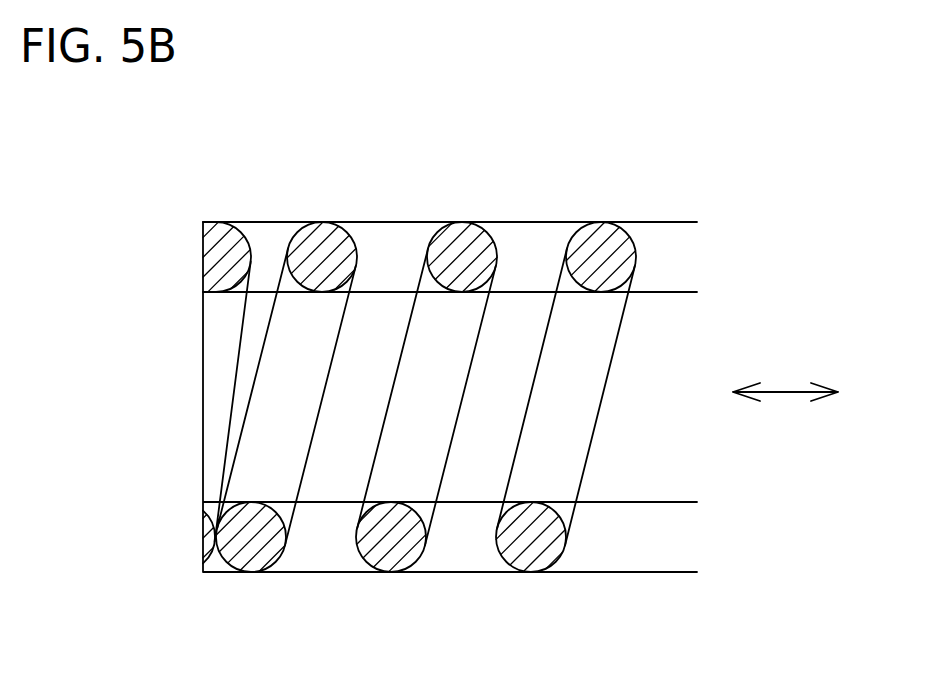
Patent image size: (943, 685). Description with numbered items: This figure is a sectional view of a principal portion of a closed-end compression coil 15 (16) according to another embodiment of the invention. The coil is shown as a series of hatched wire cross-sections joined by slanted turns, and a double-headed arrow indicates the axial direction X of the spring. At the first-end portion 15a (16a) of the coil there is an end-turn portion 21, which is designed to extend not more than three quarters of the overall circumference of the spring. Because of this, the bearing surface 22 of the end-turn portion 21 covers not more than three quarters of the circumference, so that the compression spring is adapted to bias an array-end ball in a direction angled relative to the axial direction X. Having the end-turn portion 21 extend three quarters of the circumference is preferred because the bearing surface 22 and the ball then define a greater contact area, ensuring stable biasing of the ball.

The closed-end compression coil 15 is at (450, 333).
The closed-end compression coil 16 is at (450, 397).
The first-end portion 15a is at (349, 582).
The first-end portion 16a is at (278, 562).
The end-turn portion 21 is at (222, 222).
The bearing surface 22 is at (205, 538).
The axial direction X is at (780, 392).